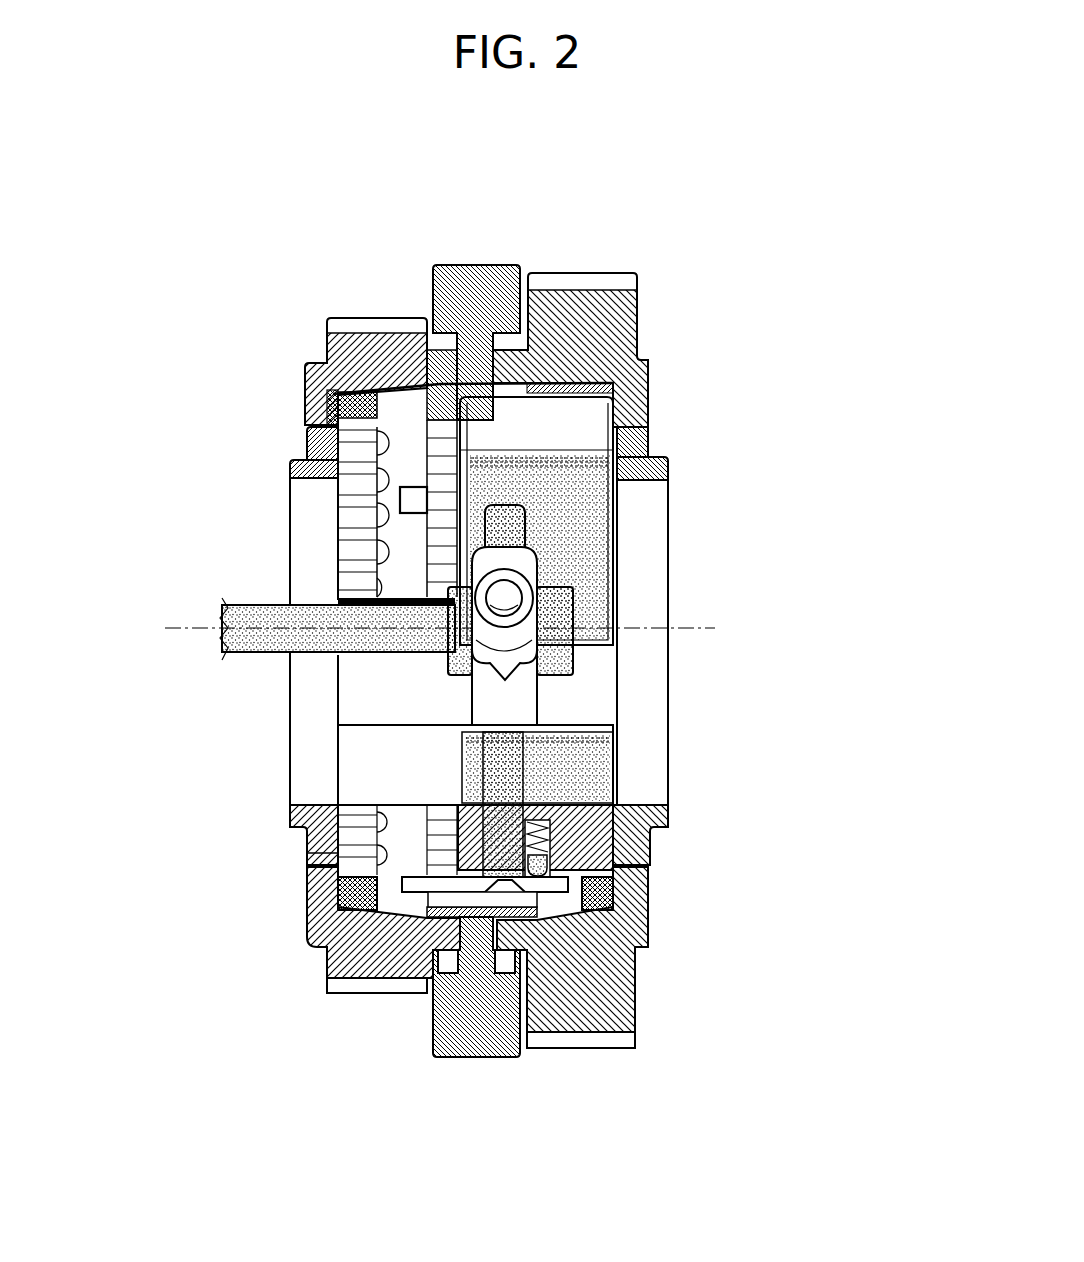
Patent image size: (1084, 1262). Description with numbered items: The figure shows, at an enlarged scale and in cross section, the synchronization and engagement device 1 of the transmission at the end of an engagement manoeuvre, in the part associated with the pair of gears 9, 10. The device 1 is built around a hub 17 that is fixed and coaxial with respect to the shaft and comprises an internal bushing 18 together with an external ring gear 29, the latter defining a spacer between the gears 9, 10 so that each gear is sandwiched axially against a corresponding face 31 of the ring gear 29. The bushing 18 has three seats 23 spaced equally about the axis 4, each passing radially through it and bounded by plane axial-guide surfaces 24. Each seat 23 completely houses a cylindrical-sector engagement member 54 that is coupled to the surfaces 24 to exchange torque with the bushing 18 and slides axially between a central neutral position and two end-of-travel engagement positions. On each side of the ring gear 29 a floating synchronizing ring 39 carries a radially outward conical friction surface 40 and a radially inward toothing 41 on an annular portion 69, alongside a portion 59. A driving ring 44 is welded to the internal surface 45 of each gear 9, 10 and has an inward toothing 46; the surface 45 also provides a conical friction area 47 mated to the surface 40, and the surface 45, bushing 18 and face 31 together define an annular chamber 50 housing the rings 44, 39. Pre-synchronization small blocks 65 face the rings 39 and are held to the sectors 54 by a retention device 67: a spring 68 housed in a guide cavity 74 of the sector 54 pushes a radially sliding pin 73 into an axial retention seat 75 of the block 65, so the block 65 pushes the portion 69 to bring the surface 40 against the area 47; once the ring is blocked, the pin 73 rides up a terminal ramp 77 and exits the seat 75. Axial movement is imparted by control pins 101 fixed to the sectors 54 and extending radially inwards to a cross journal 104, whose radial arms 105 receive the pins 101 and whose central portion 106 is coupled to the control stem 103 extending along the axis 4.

The synchronization and engagement device 1 is at (806, 366).
The axis 4 is at (165, 628).
The gear 9 is at (400, 992).
The gear 10 is at (612, 1042).
The hub 17 is at (672, 836).
The internal bushing 18 is at (668, 818).
The seat 23 is at (360, 732).
The axial-guide surface 24 is at (592, 636).
The external ring gear 29 is at (468, 1060).
The face 31 is at (447, 935).
The floating synchronizing ring 39 is at (412, 388).
The conical friction surface 40 is at (398, 378).
The toothing 41 is at (307, 440).
The driving ring 44 is at (307, 400).
The internal surface 45 is at (340, 393).
The toothing 46 is at (365, 583).
The conical friction area 47 is at (300, 468).
The annular chamber 50 is at (318, 940).
The engagement member 54 is at (590, 517).
The portion 59 is at (380, 926).
The pre-synchronization small block 65 is at (410, 520).
The retention device 67 is at (630, 871).
The spring 68 is at (552, 814).
The annular portion 69 is at (335, 856).
The pin 73 is at (620, 857).
The guide cavity 74 is at (555, 822).
The axial retention seat 75 is at (482, 873).
The terminal ramp 77 is at (496, 870).
The control pin 101 is at (505, 517).
The control stem 103 is at (262, 612).
The cross journal 104 is at (545, 686).
The radial arm 105 is at (565, 562).
The central portion 106 is at (450, 664).